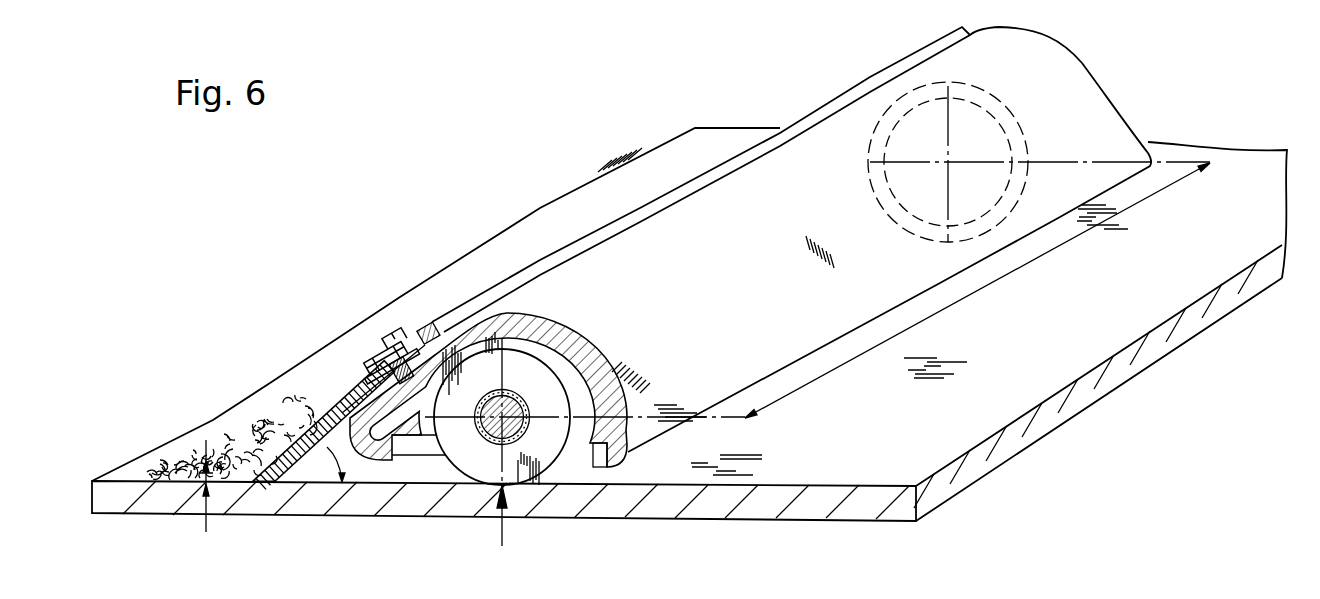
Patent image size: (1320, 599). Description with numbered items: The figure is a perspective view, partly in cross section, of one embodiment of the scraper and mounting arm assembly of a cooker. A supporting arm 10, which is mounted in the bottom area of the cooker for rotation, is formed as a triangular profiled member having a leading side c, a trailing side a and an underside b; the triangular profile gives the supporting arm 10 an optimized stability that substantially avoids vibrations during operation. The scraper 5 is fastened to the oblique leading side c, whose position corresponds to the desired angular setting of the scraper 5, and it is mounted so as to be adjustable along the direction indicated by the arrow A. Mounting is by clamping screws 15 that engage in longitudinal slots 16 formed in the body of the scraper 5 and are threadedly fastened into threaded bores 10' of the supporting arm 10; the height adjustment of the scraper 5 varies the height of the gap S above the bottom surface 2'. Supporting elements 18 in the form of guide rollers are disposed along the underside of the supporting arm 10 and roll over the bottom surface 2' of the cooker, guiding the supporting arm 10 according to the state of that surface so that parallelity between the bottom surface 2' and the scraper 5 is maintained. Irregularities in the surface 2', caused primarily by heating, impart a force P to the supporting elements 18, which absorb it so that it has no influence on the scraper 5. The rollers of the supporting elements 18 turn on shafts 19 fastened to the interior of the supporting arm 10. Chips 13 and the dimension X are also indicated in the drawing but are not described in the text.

The bottom surface 2' is at (687, 403).
The supporting arm 10 is at (689, 254).
The threaded bores 10' is at (411, 307).
The scraper 5 is at (350, 386).
The chips / removed material 13 is at (242, 432).
The clamping screws 15 is at (362, 363).
The longitudinal slots 16 is at (398, 340).
The supporting elements 18 is at (533, 470).
The shafts 19 is at (480, 432).
The trailing side a is at (604, 385).
The underside b is at (424, 452).
The leading side c is at (432, 345).
The feed direction dimension X is at (817, 290).
The force P is at (508, 518).
The gap S is at (192, 486).
The direction of adjustment A is at (335, 415).